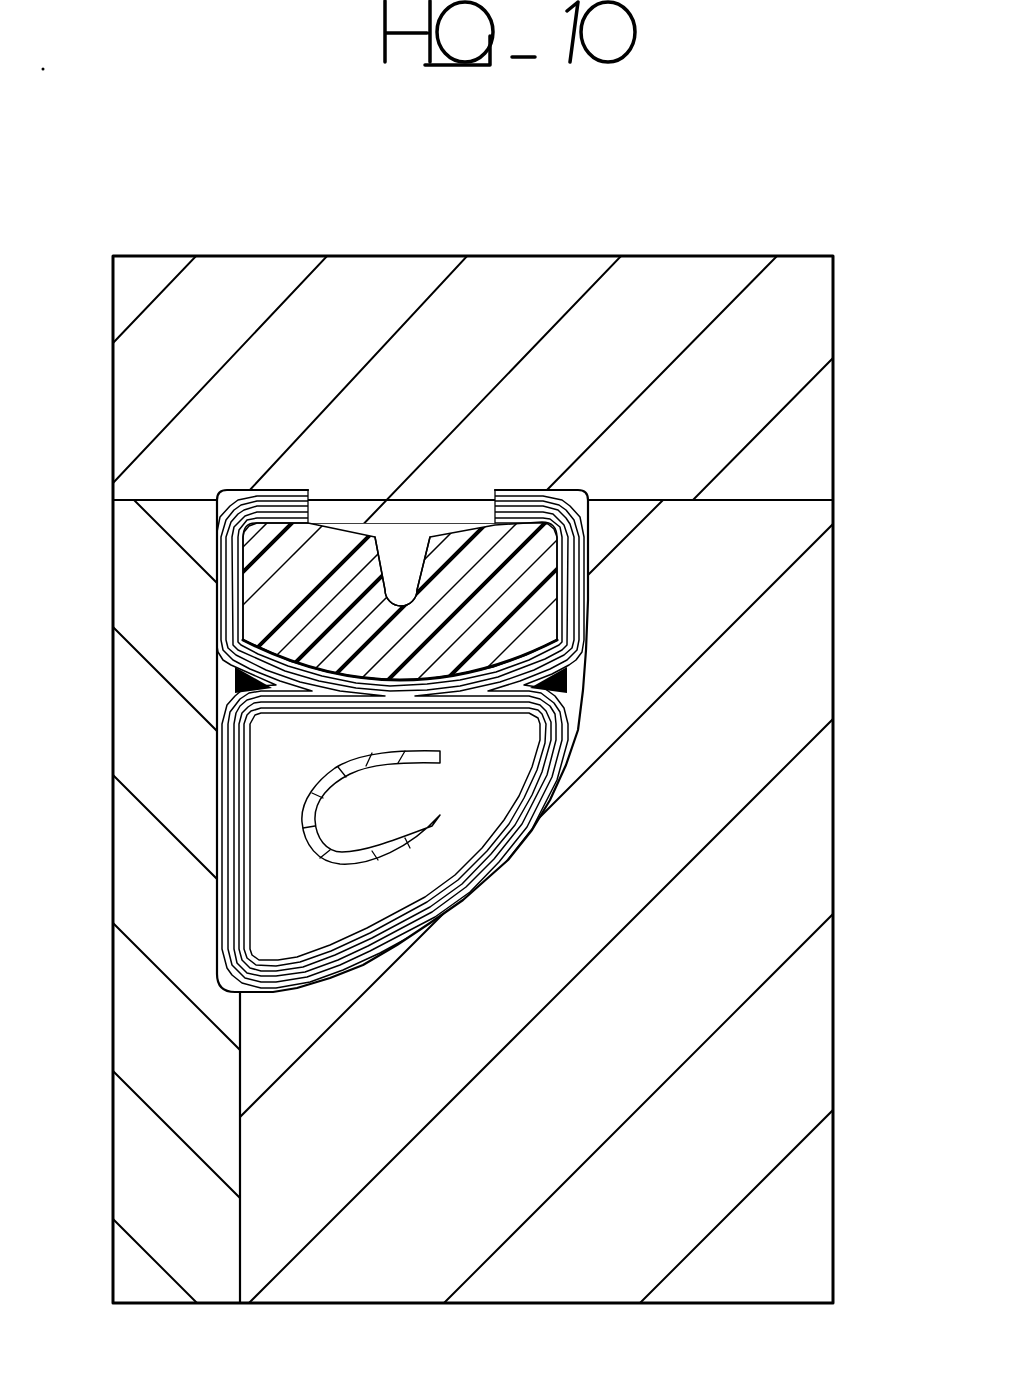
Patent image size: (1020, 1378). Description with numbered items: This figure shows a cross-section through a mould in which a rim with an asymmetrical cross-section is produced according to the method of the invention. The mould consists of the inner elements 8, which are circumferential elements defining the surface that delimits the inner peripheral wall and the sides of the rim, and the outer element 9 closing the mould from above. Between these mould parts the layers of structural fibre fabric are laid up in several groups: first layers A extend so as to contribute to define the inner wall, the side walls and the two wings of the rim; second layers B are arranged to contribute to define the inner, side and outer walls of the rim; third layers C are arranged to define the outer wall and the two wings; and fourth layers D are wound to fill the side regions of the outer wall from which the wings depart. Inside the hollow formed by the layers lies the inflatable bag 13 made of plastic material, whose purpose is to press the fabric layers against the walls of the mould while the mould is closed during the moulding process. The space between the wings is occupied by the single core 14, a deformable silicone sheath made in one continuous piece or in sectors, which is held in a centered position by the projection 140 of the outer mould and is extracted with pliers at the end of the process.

The inner elements 8 is at (815, 885).
The outer element 9 is at (812, 338).
The inflatable bag 13 is at (422, 832).
The core 14 is at (478, 555).
The projection 140 is at (400, 523).
The first layers A is at (580, 558).
The second layers B is at (522, 772).
The third layers C is at (380, 680).
The fourth layers D is at (262, 687).